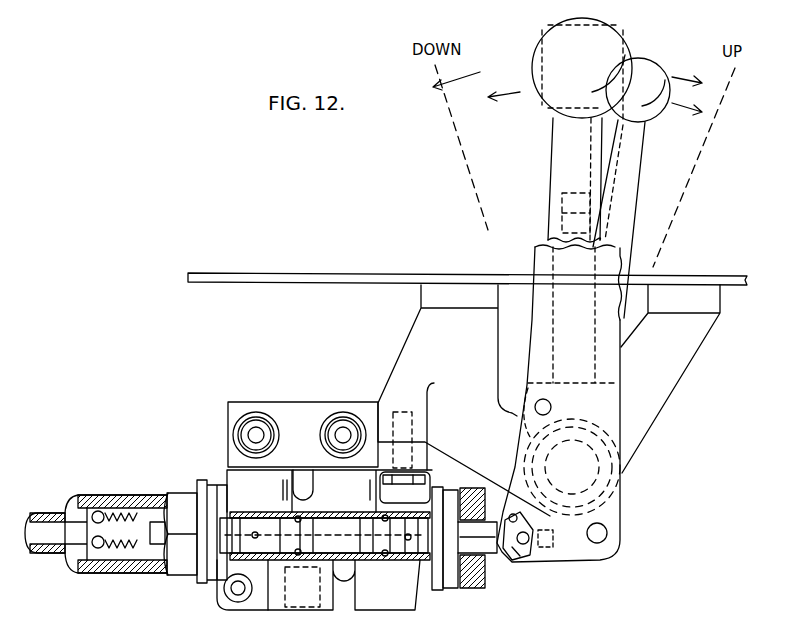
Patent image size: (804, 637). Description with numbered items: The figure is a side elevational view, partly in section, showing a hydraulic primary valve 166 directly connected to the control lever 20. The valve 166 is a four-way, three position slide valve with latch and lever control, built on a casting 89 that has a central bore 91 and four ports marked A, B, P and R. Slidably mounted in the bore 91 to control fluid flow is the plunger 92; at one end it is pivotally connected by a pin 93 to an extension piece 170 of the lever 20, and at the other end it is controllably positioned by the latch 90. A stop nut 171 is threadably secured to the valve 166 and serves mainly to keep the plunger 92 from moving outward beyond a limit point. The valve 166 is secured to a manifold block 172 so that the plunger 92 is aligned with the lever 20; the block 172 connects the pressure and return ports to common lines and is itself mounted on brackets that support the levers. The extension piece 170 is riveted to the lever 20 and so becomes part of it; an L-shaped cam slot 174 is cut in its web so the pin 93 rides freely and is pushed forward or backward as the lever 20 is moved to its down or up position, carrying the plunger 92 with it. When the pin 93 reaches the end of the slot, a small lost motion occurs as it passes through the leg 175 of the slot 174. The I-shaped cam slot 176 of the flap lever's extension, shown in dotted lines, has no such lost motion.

The control lever 20 is at (555, 167).
The primary valve 166 is at (194, 455).
The manifold block 172 is at (328, 402).
The central bore 91 is at (323, 520).
The plunger 92 is at (222, 540).
The latch 90 is at (127, 563).
The casting 89 is at (253, 607).
The stop nut 171 is at (475, 588).
The L-shaped cam slot 174 is at (527, 560).
The leg 175 is at (520, 513).
The cam slot 176 is at (547, 507).
The pin 93 is at (518, 552).
The extension piece 170 is at (558, 555).